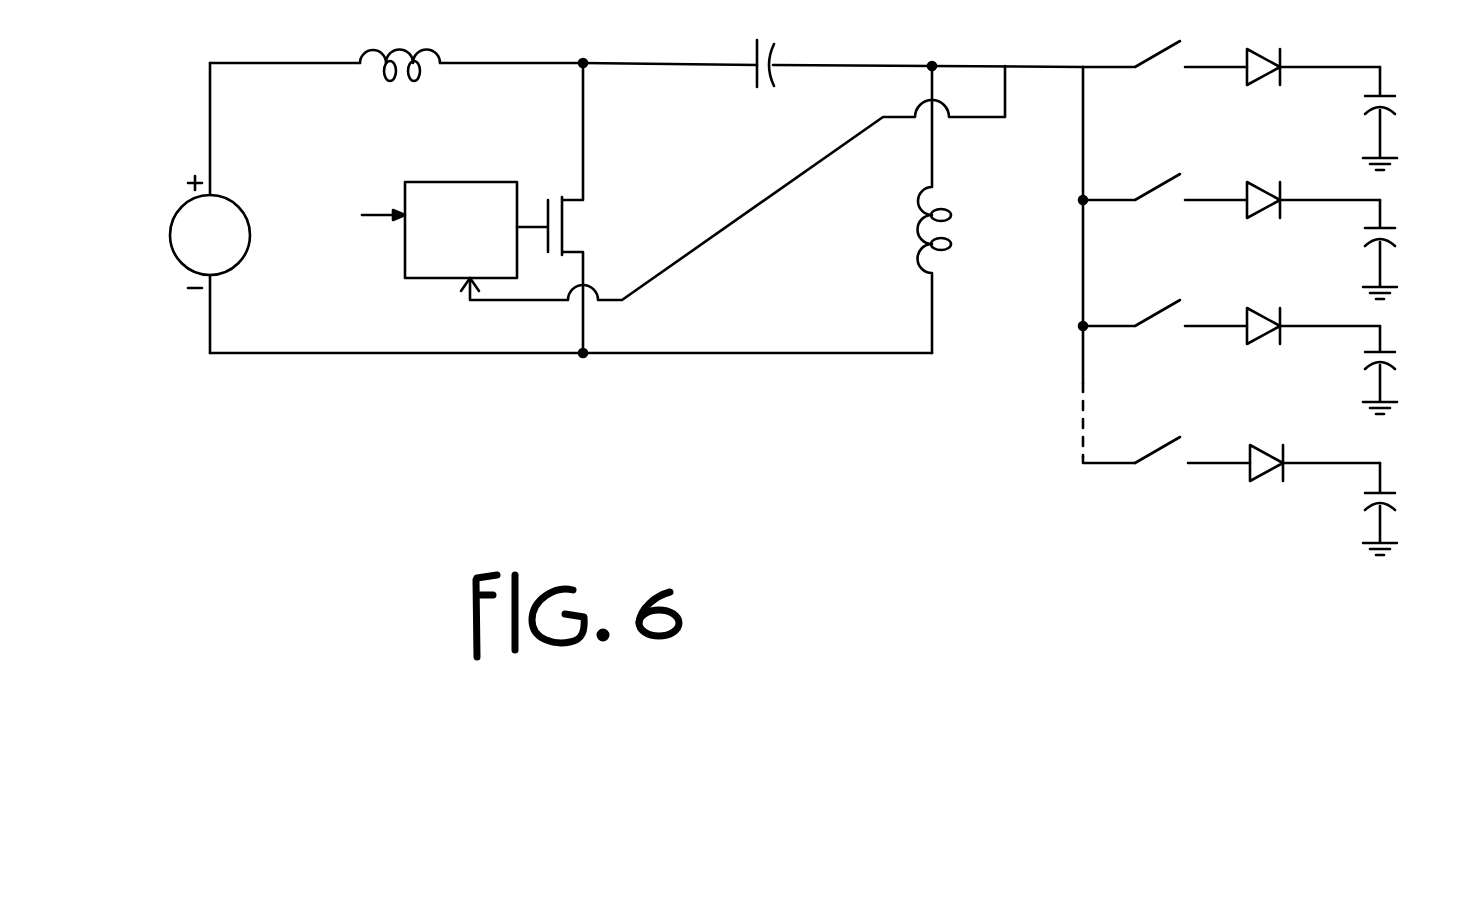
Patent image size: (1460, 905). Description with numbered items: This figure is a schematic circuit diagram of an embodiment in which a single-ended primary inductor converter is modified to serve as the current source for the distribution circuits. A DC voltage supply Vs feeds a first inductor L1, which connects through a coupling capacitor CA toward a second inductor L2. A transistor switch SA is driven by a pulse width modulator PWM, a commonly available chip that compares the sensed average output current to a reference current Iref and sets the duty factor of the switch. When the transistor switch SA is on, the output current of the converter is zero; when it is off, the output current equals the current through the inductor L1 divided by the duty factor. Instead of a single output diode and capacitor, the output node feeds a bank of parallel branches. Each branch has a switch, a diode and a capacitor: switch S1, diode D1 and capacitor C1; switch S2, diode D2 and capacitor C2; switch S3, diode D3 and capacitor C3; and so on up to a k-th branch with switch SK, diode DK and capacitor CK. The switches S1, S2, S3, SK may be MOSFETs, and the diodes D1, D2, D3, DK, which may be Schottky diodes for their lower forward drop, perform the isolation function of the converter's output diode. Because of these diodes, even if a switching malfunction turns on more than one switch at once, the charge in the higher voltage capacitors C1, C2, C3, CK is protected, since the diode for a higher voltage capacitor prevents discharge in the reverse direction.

The DC voltage supply Vs is at (134, 210).
The inductor L1 is at (400, 83).
The capacitor CA is at (771, 86).
The pulse width modulator PWM is at (461, 230).
The reference current Iref is at (351, 214).
The transistor switch SA is at (573, 208).
The inductor L2 is at (911, 209).
The switch S1 is at (1165, 72).
The diode D1 is at (1311, 85).
The capacitor C1 is at (1400, 118).
The switch S2 is at (1165, 205).
The diode D2 is at (1311, 218).
The capacitor C2 is at (1402, 249).
The switch S3 is at (1165, 331).
The diode D3 is at (1311, 344).
The capacitor C3 is at (1403, 370).
The switch SK is at (1191, 469).
The diode DK is at (1311, 484).
The capacitor CK is at (1402, 509).